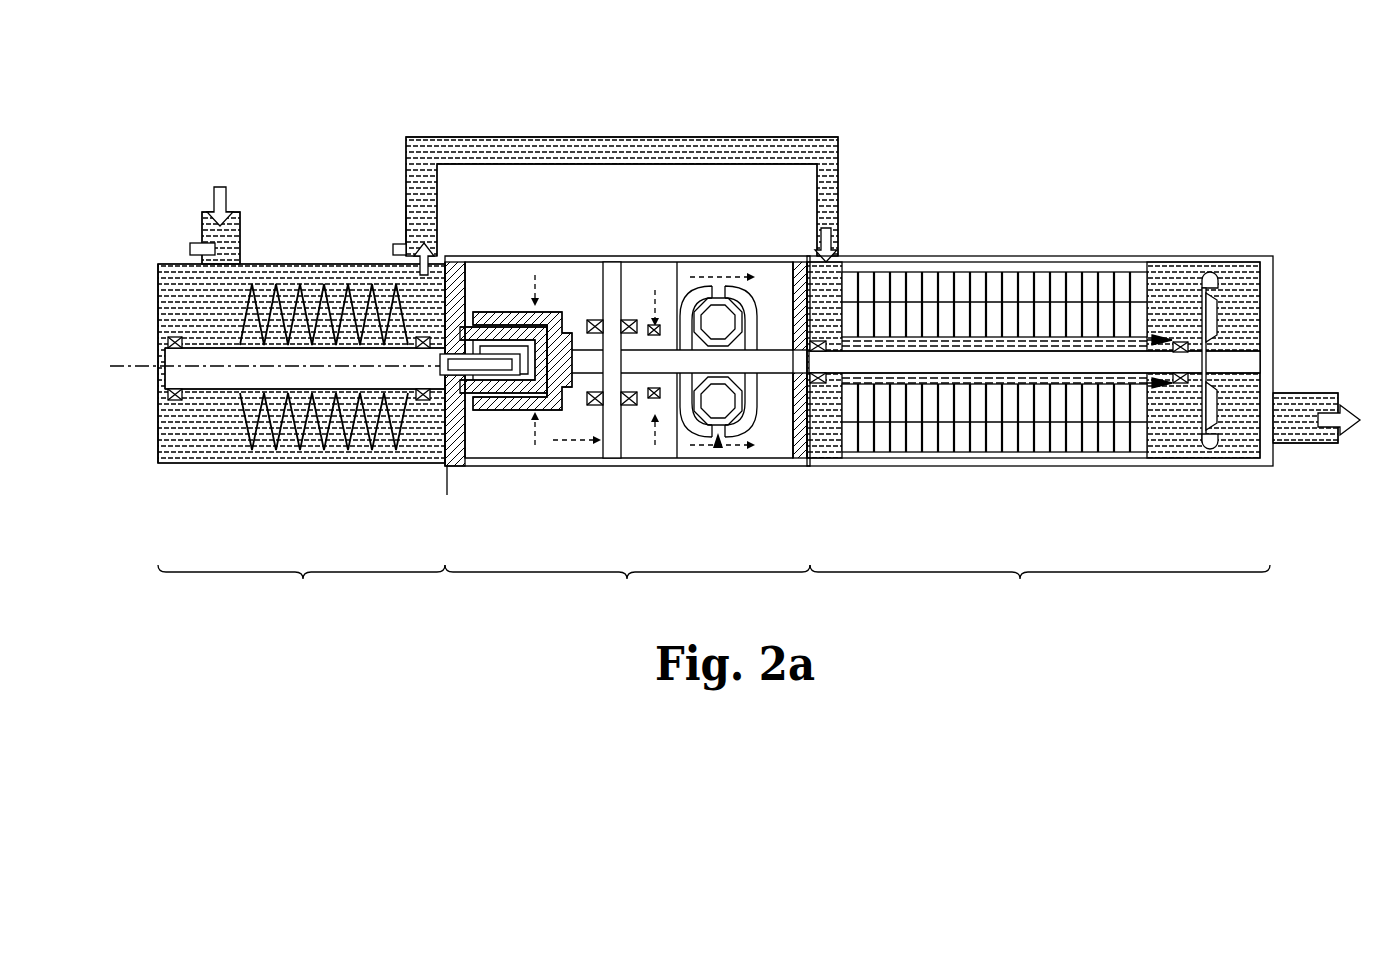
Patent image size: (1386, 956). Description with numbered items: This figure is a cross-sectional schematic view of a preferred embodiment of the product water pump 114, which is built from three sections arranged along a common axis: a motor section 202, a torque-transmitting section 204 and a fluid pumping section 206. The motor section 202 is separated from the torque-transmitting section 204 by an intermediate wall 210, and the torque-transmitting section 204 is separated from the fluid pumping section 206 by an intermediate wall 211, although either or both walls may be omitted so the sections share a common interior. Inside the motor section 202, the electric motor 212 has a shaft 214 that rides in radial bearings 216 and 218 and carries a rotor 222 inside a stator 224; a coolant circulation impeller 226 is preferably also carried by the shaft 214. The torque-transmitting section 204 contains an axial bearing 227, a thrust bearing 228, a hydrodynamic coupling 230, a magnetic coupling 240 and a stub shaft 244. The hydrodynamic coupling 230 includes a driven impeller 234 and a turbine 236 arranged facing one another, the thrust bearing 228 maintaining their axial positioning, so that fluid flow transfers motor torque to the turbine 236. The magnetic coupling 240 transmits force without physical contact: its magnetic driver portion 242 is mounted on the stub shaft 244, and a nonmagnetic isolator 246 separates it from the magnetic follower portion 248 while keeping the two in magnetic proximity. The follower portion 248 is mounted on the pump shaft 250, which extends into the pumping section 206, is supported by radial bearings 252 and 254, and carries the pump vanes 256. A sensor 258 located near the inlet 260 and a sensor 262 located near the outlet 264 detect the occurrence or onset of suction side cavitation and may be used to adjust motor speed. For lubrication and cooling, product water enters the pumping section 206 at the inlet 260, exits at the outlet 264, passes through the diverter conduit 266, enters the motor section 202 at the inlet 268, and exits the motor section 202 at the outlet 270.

The pump 114 is at (262, 102).
The motor section 202 is at (1040, 432).
The torque-transmitting section 204 is at (627, 432).
The fluid pumping section 206 is at (301, 436).
The intermediate wall 210 is at (800, 262).
The intermediate wall 211 is at (455, 262).
The electric motor 212 is at (920, 470).
The shaft 214 is at (850, 462).
The radial bearing 216 is at (1181, 387).
The radial bearing 218 is at (820, 388).
The rotor 222 is at (1022, 413).
The stator 224 is at (1082, 440).
The coolant circulation impeller 226 is at (1213, 447).
The axial bearing 227 is at (657, 405).
The thrust bearing 228 is at (612, 460).
The hydrodynamic coupling 230 is at (719, 432).
The impeller 234 is at (766, 440).
The turbine 236 is at (690, 440).
The magnetic coupling 240 is at (502, 298).
The magnetic driver portion 242 is at (530, 412).
The stub shaft 244 is at (579, 380).
The nonmagnetic isolator 246 is at (489, 410).
The magnetic follower portion 248 is at (472, 412).
The pump shaft 250 is at (453, 367).
The radial bearing 252 is at (424, 345).
The radial bearing 254 is at (167, 342).
The pump vanes 256 is at (245, 435).
The sensor 258 is at (190, 249).
The inlet 260 is at (200, 200).
The sensor 262 is at (393, 249).
The outlet 264 is at (395, 205).
The diverter conduit 266 is at (704, 137).
The inlet 268 is at (835, 262).
The outlet 270 is at (1308, 380).